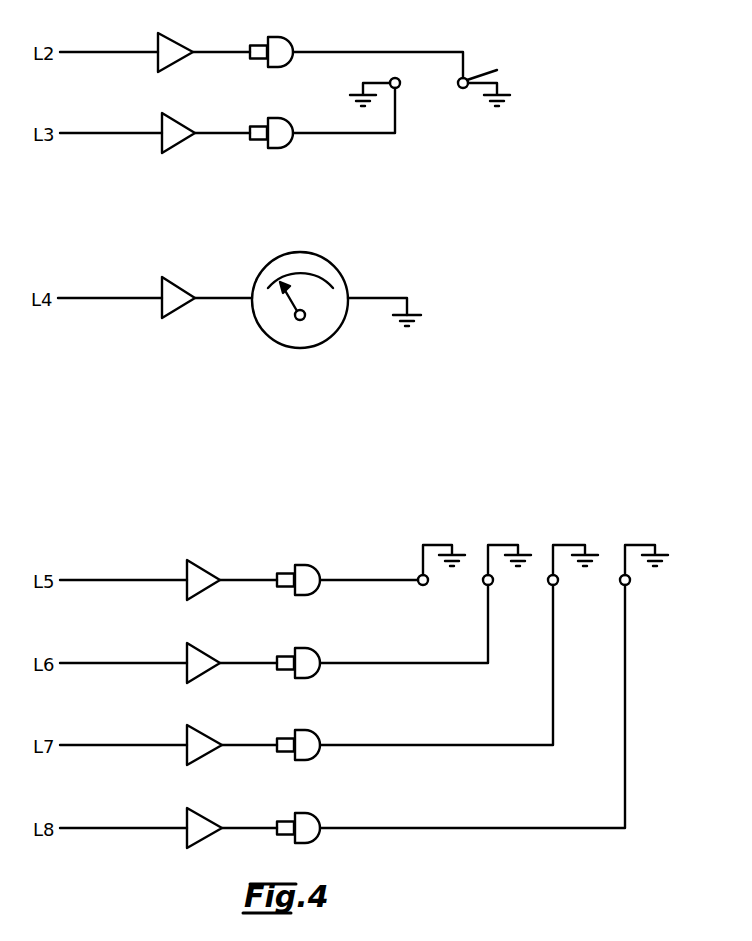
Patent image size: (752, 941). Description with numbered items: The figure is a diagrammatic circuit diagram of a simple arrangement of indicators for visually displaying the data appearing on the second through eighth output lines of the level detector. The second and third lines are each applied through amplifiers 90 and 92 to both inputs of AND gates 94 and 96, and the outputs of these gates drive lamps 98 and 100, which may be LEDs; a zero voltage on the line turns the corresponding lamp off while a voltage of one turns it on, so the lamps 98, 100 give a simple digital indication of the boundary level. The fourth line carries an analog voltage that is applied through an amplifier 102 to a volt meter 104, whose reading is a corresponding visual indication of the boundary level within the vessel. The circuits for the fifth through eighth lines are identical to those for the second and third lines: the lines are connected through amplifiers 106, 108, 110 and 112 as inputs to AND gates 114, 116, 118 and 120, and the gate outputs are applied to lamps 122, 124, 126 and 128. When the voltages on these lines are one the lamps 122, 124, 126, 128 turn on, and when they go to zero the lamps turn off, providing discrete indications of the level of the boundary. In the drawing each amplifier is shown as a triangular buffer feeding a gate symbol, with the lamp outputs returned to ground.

The amplifier 90 is at (180, 45).
The amplifier 92 is at (183, 126).
The AND gate 94 is at (287, 35).
The AND gate 96 is at (287, 116).
The lamp 98 is at (491, 85).
The lamp 100 is at (399, 79).
The amplifier 102 is at (182, 285).
The volt meter 104 is at (335, 263).
The amplifier 106 is at (200, 565).
The amplifier 108 is at (200, 648).
The amplifier 110 is at (207, 728).
The amplifier 112 is at (207, 815).
The AND gate 114 is at (310, 563).
The AND gate 116 is at (310, 646).
The AND gate 118 is at (310, 728).
The AND gate 120 is at (310, 815).
The lamp 122 is at (420, 586).
The lamp 124 is at (486, 586).
The lamp 126 is at (550, 586).
The lamp 128 is at (622, 586).